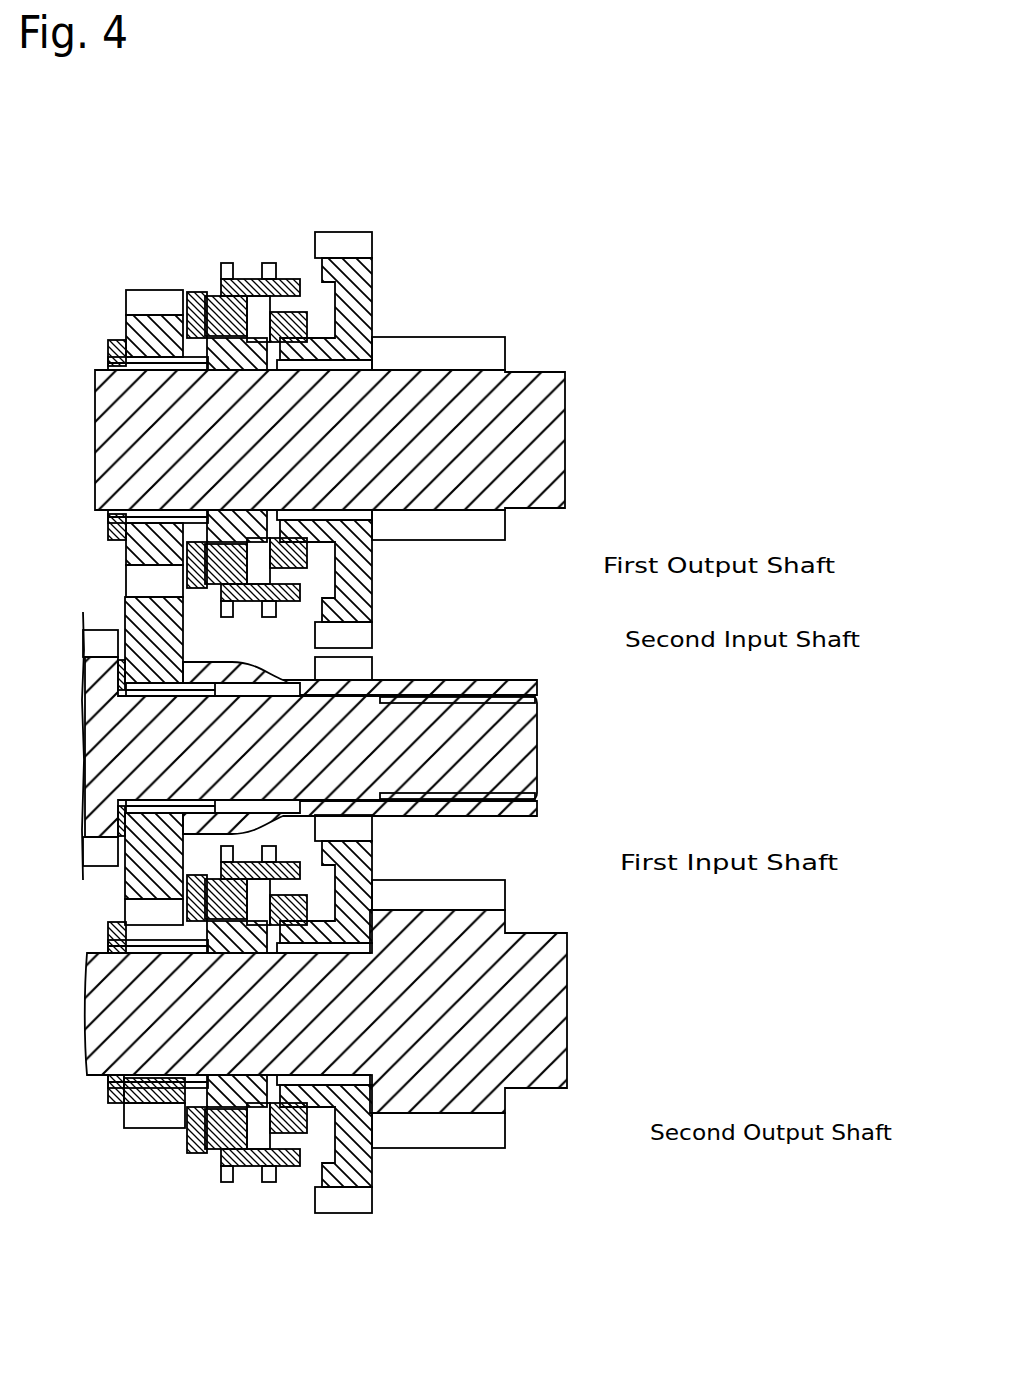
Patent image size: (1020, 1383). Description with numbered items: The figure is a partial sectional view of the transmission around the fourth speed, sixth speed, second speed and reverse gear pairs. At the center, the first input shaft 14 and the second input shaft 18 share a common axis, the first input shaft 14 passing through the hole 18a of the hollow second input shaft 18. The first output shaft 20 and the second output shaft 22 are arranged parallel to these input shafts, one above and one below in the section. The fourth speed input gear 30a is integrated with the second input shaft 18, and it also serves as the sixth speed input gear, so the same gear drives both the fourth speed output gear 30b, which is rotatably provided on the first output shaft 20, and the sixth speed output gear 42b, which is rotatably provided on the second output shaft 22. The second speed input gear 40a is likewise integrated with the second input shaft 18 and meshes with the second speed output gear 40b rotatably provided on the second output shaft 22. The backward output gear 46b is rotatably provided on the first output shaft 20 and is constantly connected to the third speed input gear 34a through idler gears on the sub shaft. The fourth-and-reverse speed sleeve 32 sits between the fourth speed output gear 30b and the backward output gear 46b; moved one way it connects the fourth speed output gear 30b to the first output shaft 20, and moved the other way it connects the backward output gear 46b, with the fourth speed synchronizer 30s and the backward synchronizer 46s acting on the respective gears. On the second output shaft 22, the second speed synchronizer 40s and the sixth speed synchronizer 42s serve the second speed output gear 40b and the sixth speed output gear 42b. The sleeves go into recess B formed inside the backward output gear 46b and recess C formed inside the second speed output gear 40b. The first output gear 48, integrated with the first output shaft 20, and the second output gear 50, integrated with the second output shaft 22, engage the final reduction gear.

The first input shaft 14 is at (510, 748).
The second input shaft 18 is at (537, 688).
The hole of the second input shaft 18a is at (537, 703).
The first output shaft 20 is at (520, 497).
The second output shaft 22 is at (537, 1038).
The fourth speed input gear 30a is at (145, 630).
The fourth speed output gear 30b is at (128, 335).
The fourth speed synchronizer 30s is at (214, 300).
The 4-R speed sleeve 32 is at (247, 280).
The third speed input gear 34a is at (95, 823).
The second speed input gear 40a is at (358, 670).
The second speed output gear 40b is at (355, 1183).
The second speed synchronizer 40s is at (386, 880).
The sixth speed output gear 42b is at (135, 1112).
The sixth speed synchronizer 42s is at (208, 1160).
The backward output gear 46b is at (372, 262).
The backward synchronizer 46s is at (362, 312).
The first output gear 48 is at (490, 350).
The second output gear 50 is at (505, 1138).
The recess B is at (320, 284).
The recess C is at (320, 1165).